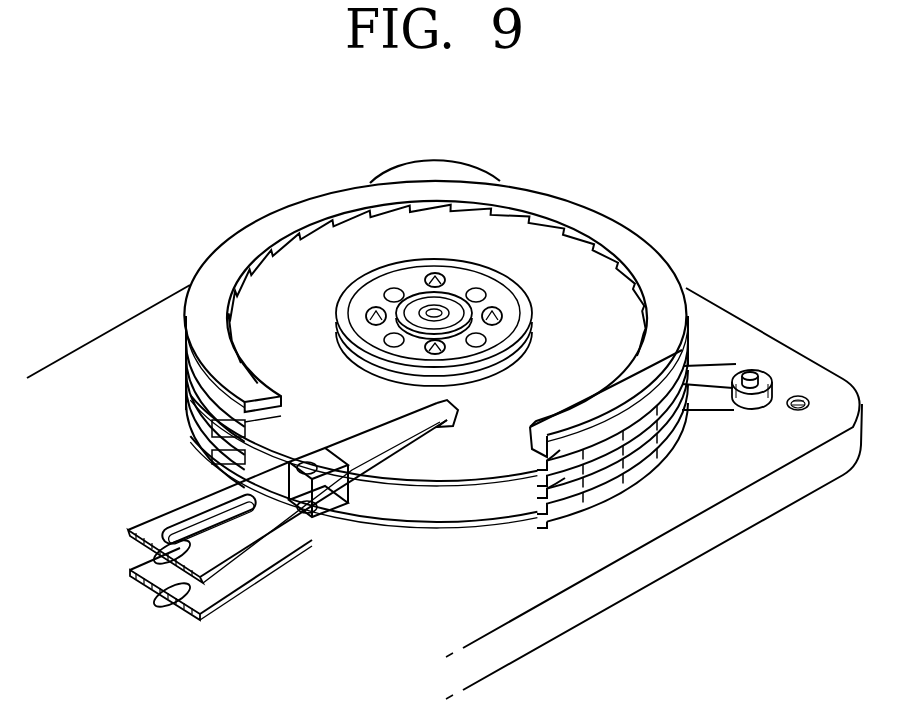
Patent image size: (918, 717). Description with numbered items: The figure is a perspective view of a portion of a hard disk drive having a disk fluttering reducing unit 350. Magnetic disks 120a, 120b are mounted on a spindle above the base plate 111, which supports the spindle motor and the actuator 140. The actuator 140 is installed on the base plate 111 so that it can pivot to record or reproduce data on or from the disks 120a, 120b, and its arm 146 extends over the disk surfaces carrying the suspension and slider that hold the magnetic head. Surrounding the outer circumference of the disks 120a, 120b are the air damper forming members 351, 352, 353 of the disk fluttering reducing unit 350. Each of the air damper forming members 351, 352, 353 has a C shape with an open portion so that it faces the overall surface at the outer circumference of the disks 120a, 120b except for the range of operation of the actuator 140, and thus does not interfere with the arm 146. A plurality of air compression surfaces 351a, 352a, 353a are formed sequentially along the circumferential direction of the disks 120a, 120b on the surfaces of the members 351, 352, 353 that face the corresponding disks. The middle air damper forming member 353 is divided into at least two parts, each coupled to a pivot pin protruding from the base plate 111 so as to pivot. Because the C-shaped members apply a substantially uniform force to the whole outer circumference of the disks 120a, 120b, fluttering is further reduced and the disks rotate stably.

The base plate 111 is at (811, 477).
The magnetic disk 120a is at (420, 507).
The magnetic disk 120b is at (423, 472).
The actuator 140 is at (163, 498).
The arm 146 is at (130, 567).
The disk fluttering reducing unit 350 is at (764, 602).
The air damper forming member 351 is at (610, 497).
The air compression surface 351a is at (557, 517).
The air damper forming member 352 is at (680, 413).
The air compression surface 352a is at (540, 482).
The air damper forming member 353 is at (650, 470).
The air compression surface 353a is at (527, 478).